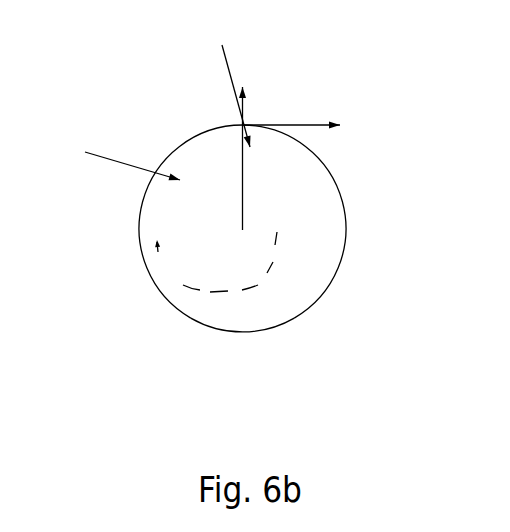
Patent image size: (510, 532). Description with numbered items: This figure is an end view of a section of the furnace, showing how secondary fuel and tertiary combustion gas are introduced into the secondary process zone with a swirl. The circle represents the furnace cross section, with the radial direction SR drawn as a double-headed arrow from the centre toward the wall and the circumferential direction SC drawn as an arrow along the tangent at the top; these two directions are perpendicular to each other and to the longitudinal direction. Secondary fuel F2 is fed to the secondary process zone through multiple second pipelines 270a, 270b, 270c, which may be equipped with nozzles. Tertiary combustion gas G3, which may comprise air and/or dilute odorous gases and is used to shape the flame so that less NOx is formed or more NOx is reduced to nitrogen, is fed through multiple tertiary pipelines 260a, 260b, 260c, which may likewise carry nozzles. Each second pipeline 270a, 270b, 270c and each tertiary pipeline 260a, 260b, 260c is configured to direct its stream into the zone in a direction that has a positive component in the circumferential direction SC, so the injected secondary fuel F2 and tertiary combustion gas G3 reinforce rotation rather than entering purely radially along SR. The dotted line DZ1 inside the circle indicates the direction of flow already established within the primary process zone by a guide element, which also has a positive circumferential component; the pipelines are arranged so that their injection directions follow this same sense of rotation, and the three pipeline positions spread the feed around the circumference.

The tertiary pipeline 260a is at (132, 168).
The tertiary pipeline 260b is at (235, 305).
The tertiary pipeline 260c is at (317, 200).
The second pipeline 270a is at (237, 111).
The second pipeline 270b is at (172, 267).
The second pipeline 270c is at (308, 273).
The direction of flow within the primary zone DZ1 is at (267, 273).
The secondary fuel F2 is at (225, 80).
The radial direction SR is at (245, 93).
The circumferential direction SC is at (315, 119).
The tertiary combustion gas G3 is at (114, 154).